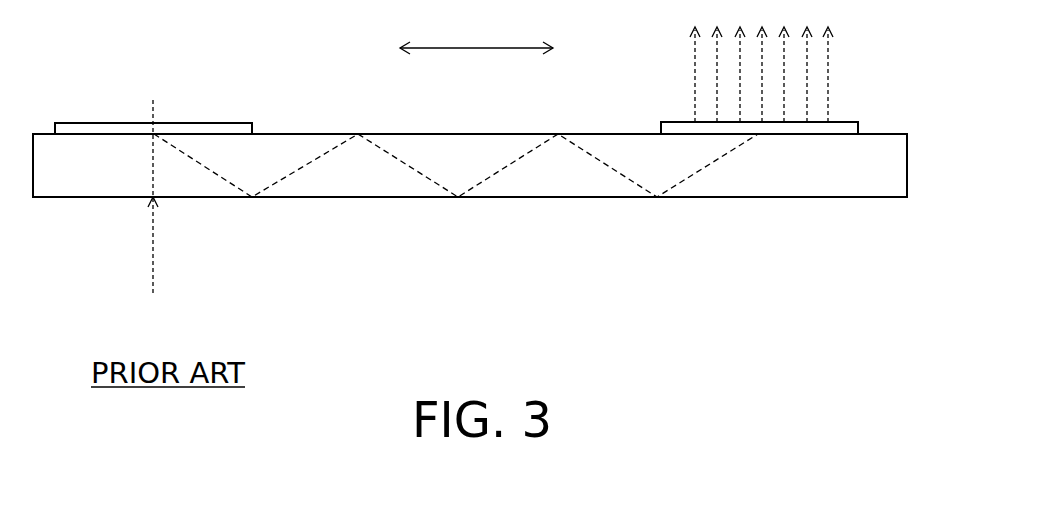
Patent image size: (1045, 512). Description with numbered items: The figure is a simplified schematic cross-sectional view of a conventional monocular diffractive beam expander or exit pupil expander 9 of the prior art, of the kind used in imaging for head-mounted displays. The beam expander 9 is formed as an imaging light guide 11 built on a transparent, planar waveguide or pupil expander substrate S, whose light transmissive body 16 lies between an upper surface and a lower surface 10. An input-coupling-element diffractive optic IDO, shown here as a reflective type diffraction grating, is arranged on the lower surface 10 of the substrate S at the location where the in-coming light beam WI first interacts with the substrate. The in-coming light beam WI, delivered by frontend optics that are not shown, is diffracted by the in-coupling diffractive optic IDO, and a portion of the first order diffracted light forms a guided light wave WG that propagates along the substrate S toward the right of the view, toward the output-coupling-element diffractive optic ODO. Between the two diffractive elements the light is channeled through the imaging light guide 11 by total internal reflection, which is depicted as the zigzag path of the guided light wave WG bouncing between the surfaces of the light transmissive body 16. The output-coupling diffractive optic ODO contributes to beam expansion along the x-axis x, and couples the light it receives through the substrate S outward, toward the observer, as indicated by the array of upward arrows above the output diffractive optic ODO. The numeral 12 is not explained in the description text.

The diffractive beam expander 9 is at (785, 223).
The lower surface 10 is at (340, 197).
The imaging light guide 11 is at (740, 197).
The waveguide body 12 is at (778, 420).
The light transmissive body 16 is at (452, 150).
The input-coupling-element diffractive optic IDO is at (243, 122).
The output-coupling-element diffractive optic ODO is at (853, 122).
The guided light wave WG is at (512, 162).
The in-coming light beam WI is at (194, 340).
The pupil expander substrate S is at (864, 188).
The x-axis x is at (458, 48).